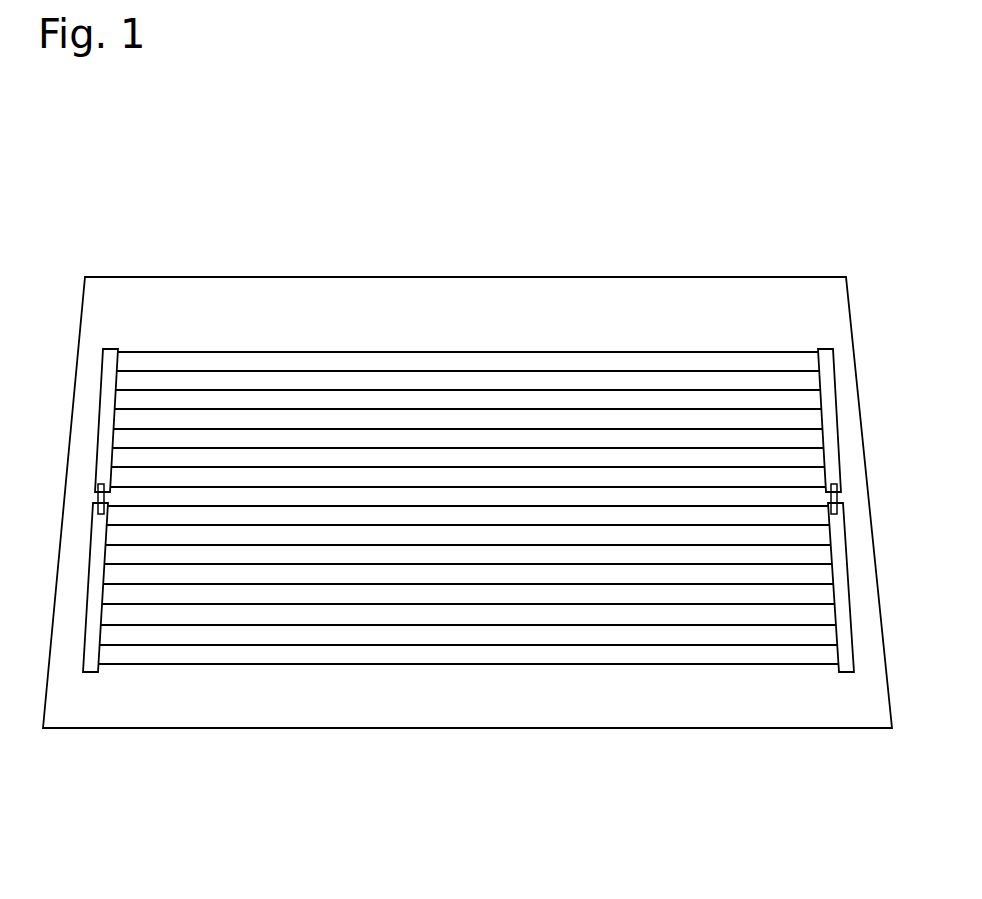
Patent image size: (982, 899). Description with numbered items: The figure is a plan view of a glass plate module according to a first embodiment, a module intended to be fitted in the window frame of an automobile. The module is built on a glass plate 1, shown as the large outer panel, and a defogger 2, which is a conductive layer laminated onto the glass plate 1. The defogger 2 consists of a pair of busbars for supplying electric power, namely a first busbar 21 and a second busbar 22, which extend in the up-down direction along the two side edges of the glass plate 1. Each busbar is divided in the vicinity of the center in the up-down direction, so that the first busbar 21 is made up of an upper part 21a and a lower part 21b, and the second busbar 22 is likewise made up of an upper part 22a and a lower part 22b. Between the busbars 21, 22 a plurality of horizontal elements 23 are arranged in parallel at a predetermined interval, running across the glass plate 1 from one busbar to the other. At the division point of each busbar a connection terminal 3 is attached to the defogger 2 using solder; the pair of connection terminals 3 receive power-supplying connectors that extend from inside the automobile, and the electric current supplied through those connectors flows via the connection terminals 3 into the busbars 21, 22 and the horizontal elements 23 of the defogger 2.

The glass plate 1 is at (268, 300).
The defogger 2 is at (251, 699).
The first busbar 21 is at (873, 490).
The upper part 21a is at (831, 409).
The lower part 21b is at (842, 572).
The second busbar 22 is at (61, 483).
The upper part 22a is at (107, 395).
The lower part 22b is at (95, 556).
The horizontal elements 23 is at (393, 353).
The connection terminals 3 is at (98, 497).